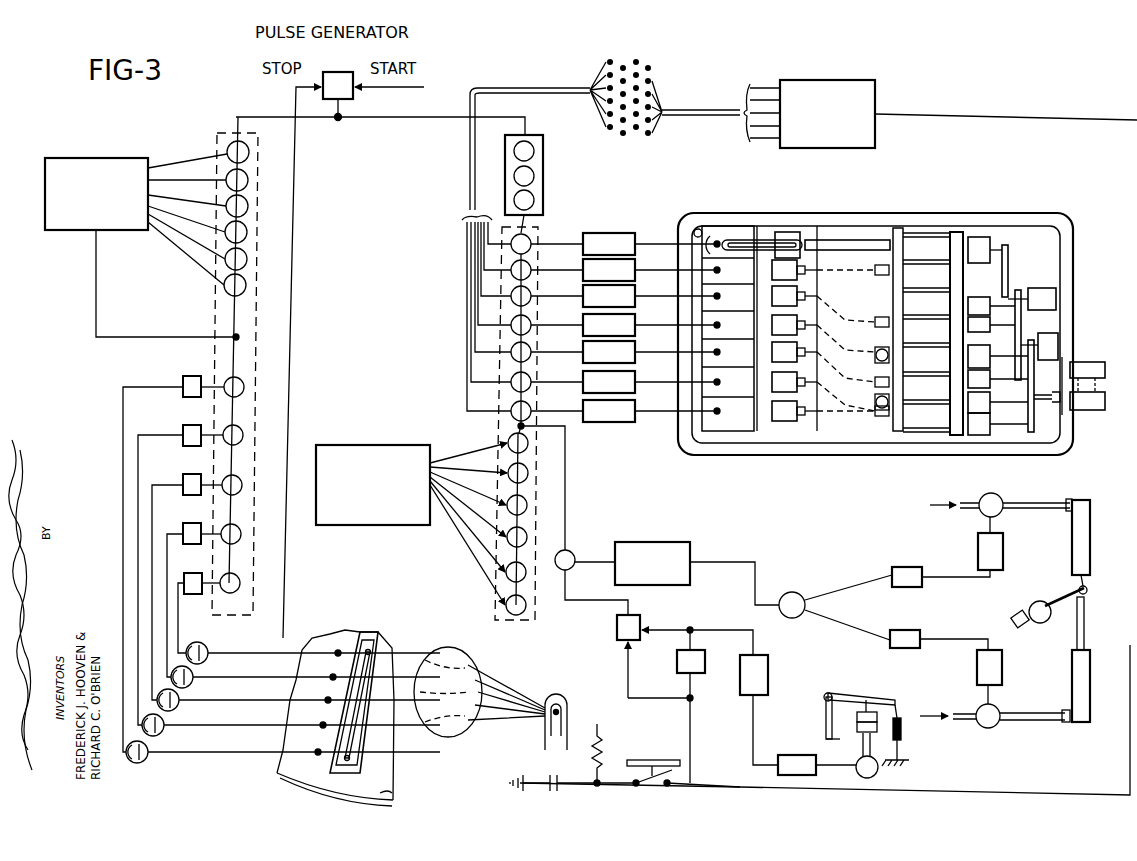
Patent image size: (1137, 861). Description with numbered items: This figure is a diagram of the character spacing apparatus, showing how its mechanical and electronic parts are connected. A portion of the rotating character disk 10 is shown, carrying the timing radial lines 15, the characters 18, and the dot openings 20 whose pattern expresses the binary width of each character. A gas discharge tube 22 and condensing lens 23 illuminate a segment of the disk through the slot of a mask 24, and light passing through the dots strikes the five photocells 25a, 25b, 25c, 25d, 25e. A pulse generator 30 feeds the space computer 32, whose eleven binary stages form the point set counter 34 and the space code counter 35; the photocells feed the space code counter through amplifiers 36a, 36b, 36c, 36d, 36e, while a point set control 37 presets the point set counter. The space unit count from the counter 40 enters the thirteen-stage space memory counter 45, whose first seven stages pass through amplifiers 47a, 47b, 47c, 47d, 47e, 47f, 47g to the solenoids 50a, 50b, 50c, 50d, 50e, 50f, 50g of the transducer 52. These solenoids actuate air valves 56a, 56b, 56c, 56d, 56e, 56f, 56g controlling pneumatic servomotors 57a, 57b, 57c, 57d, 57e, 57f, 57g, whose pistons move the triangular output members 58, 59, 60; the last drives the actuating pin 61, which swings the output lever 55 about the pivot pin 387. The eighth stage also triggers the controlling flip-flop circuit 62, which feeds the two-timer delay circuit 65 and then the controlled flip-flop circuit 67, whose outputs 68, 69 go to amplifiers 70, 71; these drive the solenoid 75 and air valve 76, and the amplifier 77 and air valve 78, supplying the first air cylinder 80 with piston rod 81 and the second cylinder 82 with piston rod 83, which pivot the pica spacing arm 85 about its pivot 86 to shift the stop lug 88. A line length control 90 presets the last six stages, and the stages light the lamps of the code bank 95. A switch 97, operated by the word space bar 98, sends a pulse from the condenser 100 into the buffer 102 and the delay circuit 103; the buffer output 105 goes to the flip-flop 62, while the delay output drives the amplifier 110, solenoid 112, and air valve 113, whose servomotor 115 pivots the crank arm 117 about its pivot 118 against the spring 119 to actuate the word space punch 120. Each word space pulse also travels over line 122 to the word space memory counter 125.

The character disk 10 is at (383, 644).
The radial lines 15 is at (290, 782).
The characters 18 is at (392, 790).
The dot openings 20 is at (332, 675).
The gas discharge tube 22 is at (556, 700).
The condensing lens 23 is at (464, 658).
The mask 24 is at (368, 632).
The photocell 25a is at (190, 641).
The photocell 25b is at (192, 681).
The photocell 25c is at (177, 705).
The photocell 25d is at (163, 730).
The photocell 25e is at (143, 759).
The pulse generator 30 is at (338, 72).
The space computer 32 is at (255, 320).
The point set counter 34 is at (250, 221).
The space code counter 35 is at (226, 470).
The amplifier 36a is at (188, 376).
The amplifier 36b is at (190, 425).
The amplifier 36c is at (190, 492).
The amplifier 36d is at (192, 544).
The amplifier 36e is at (202, 592).
The point set control 37 is at (52, 162).
The counter 40 is at (543, 163).
The space memory counter 45 is at (538, 228).
The amplifier 47a is at (624, 244).
The amplifier 47b is at (624, 270).
The amplifier 47c is at (624, 296).
The amplifier 47d is at (624, 325).
The amplifier 47e is at (624, 352).
The amplifier 47f is at (624, 382).
The amplifier 47g is at (624, 411).
The solenoid 50a is at (718, 238).
The solenoid 50b is at (702, 252).
The solenoid 50c is at (712, 292).
The solenoid 50d is at (712, 322).
The solenoid 50e is at (712, 350).
The solenoid 50f is at (715, 380).
The solenoid 50g is at (728, 430).
The transducer 52 is at (866, 212).
The output lever 55 is at (1084, 370).
The air valve 56a is at (778, 240).
The air valve 56b is at (772, 270).
The air valve 56c is at (800, 298).
The air valve 56d is at (772, 325).
The air valve 56e is at (772, 352).
The air valve 56f is at (772, 380).
The air valve 56g is at (785, 421).
The pneumatic servomotor 57a is at (938, 238).
The pneumatic servomotor 57b is at (912, 270).
The pneumatic servomotor 57c is at (922, 326).
The pneumatic servomotor 57d is at (916, 358).
The pneumatic servomotor 57e is at (900, 389).
The pneumatic servomotor 57f is at (918, 405).
The pneumatic servomotor 57g is at (940, 425).
The triangular output member 58 is at (1008, 240).
The triangular output member 59 is at (1020, 318).
The triangular output member 60 is at (1032, 428).
The actuating pin 61 is at (1076, 435).
The controlling flip-flop circuit 62 is at (570, 552).
The two-timer delay circuit 65 is at (663, 556).
The controlled flip-flop circuit 67 is at (789, 593).
The output 68 is at (840, 590).
The output 69 is at (864, 633).
The amplifier 70 is at (904, 566).
The amplifier 71 is at (912, 630).
The solenoid 75 is at (978, 540).
The air valve 76 is at (1000, 513).
The amplifier 77 is at (1003, 660).
The air valve 78 is at (991, 725).
The first air cylinder 80 is at (1086, 535).
The output piston rod 81 is at (1087, 589).
The second cylinder 82 is at (1086, 682).
The output piston rod 83 is at (1084, 624).
The pica spacing arm 85 is at (1048, 603).
The pivot 86 is at (1037, 624).
The stop lug 88 is at (1013, 622).
The line length control 90 is at (360, 450).
The code bank 95 is at (650, 68).
The switch 97 is at (664, 786).
The word space bar 98 is at (655, 759).
The condenser 100 is at (558, 788).
The buffer 102 is at (617, 628).
The delay circuit 103 is at (680, 660).
The buffer output 105 is at (585, 600).
The amplifier 110 is at (756, 657).
The solenoid 112 is at (782, 757).
The air valve 113 is at (877, 774).
The pneumatic servomotor 115 is at (892, 700).
The crank arm 117 is at (849, 693).
The pivot 118 is at (825, 694).
The spring 119 is at (900, 726).
The word space punch 120 is at (825, 737).
The line 122 is at (1082, 118).
The word space memory counter 125 is at (832, 80).
The pivot pin 387 is at (1090, 408).